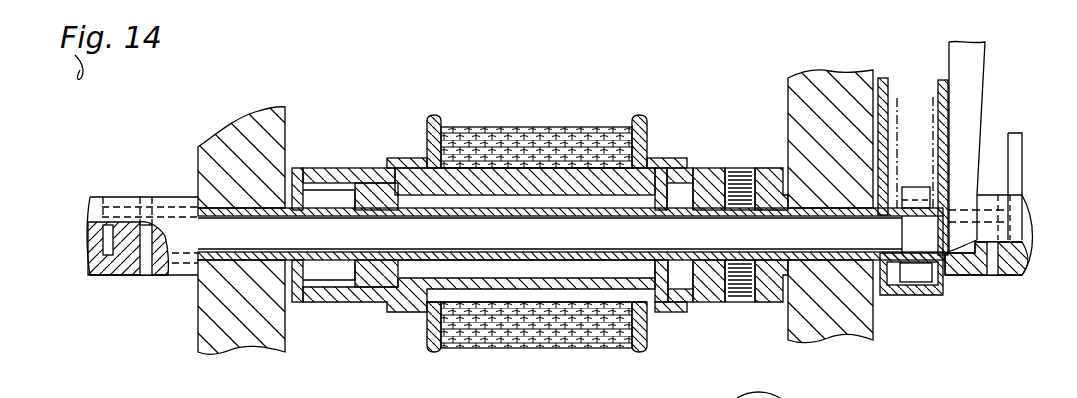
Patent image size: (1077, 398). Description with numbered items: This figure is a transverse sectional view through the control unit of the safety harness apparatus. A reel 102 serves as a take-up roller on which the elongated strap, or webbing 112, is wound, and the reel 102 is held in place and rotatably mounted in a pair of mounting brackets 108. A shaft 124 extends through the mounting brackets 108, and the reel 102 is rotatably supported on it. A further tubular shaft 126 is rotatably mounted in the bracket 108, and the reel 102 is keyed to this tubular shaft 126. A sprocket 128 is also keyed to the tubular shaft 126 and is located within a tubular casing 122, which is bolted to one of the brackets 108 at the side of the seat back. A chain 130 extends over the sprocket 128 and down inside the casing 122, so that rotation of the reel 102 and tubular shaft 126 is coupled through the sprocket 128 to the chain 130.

The reel 102 is at (645, 158).
The mounting brackets 108 is at (265, 133).
The webbing 112 is at (578, 348).
The tubular casing 122 is at (946, 108).
The shaft 124 is at (377, 236).
The tubular shaft 126 is at (530, 258).
The sprocket 128 is at (945, 155).
The chain 130 is at (933, 97).